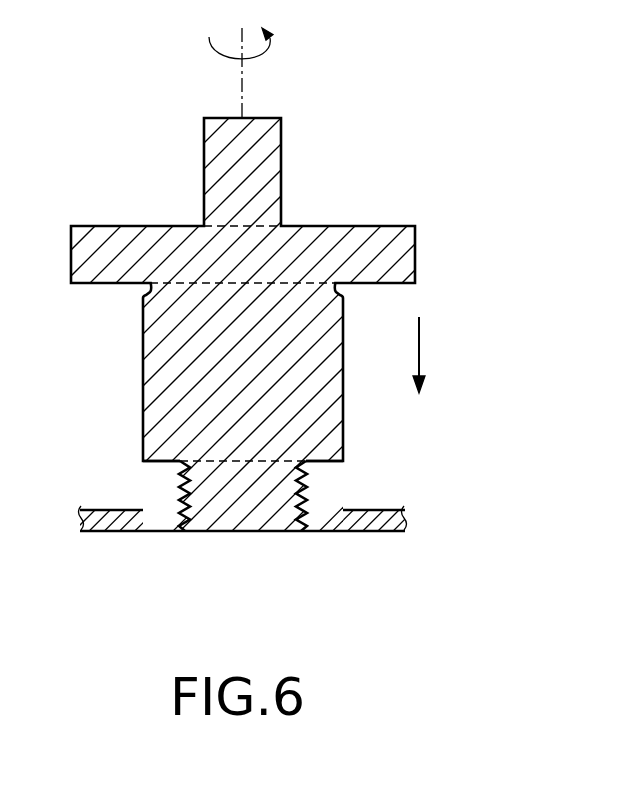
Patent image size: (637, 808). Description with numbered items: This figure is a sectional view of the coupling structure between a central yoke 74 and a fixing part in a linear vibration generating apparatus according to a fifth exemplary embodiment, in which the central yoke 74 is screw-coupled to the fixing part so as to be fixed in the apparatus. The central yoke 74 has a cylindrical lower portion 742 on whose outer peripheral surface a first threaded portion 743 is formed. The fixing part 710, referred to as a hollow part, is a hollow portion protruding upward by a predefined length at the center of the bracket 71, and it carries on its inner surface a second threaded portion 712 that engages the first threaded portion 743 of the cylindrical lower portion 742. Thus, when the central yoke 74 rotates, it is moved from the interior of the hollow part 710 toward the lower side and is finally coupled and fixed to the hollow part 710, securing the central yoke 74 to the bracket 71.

The central yoke 74 is at (318, 349).
The cylindrical lower portion 742 is at (240, 529).
The first threaded portion 743 is at (196, 506).
The bracket 71 is at (137, 535).
The fixing part (hollow part) 710 is at (463, 349).
The second threaded portion 712 is at (317, 504).